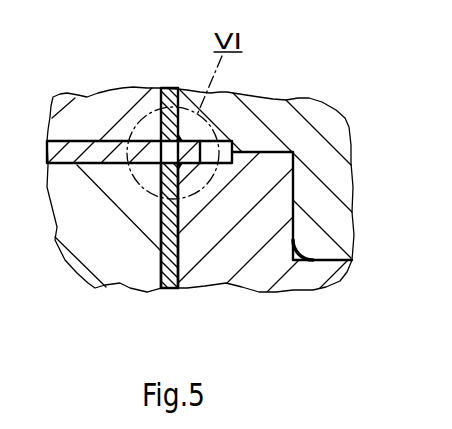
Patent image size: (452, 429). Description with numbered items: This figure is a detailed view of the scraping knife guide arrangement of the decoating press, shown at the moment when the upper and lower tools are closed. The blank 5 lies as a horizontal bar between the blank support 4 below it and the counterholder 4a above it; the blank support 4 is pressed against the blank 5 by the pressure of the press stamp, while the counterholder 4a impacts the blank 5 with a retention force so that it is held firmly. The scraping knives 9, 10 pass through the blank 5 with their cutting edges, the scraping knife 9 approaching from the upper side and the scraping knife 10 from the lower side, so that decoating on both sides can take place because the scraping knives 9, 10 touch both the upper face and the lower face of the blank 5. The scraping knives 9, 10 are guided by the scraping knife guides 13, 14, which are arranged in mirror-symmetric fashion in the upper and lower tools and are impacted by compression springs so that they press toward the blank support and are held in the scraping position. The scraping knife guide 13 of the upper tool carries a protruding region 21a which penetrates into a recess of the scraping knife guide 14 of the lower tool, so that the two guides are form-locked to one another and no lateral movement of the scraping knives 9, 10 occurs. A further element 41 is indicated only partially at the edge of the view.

The blank support 4 is at (115, 265).
The counterholder 4a is at (110, 103).
The blank 5 is at (72, 148).
The scraping knife 9 is at (168, 85).
The scraping knife 10 is at (170, 287).
The scraping knife guide 13 is at (278, 118).
The scraping knife guide 14 is at (264, 265).
The protruding region 21a is at (328, 205).
The adjacent element 41 is at (447, 253).